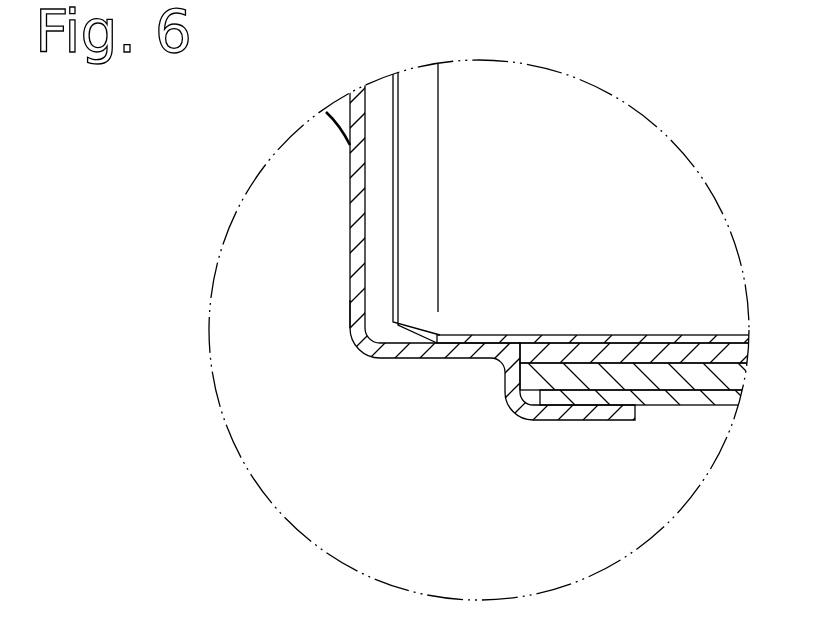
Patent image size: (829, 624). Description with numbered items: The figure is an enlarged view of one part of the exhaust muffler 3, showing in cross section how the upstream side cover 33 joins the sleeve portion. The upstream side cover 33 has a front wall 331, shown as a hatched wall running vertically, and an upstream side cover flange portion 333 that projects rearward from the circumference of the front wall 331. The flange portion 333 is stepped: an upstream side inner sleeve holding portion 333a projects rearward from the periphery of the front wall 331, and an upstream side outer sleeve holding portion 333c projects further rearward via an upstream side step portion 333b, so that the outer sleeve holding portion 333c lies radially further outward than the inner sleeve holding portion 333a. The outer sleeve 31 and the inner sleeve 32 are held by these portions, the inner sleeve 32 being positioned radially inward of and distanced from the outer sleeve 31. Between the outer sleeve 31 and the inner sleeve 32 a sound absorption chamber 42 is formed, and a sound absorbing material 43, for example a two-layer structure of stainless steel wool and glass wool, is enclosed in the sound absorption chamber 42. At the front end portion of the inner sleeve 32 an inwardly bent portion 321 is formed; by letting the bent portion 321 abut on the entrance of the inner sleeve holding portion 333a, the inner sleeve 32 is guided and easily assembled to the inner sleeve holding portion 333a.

The exhaust muffler 3 is at (495, 321).
The outer sleeve 31 is at (693, 403).
The inner sleeve 32 is at (563, 335).
The upstream side cover 33 is at (350, 203).
The front wall 331 is at (348, 278).
The bent portion 321 is at (408, 322).
The upstream side cover flange portion 333 is at (435, 281).
The upstream side inner sleeve holding portion 333a is at (424, 358).
The upstream side step portion 333b is at (506, 378).
The upstream side outer sleeve holding portion 333c is at (560, 420).
The sound absorption chamber 42 is at (636, 340).
The sound absorbing material 43 is at (673, 370).